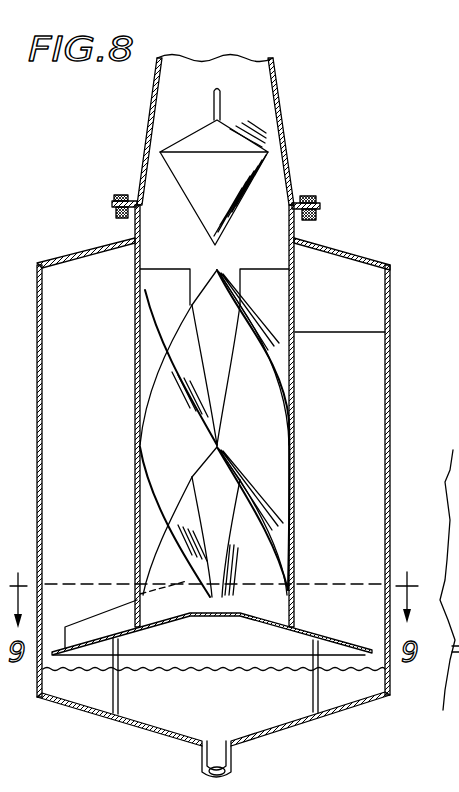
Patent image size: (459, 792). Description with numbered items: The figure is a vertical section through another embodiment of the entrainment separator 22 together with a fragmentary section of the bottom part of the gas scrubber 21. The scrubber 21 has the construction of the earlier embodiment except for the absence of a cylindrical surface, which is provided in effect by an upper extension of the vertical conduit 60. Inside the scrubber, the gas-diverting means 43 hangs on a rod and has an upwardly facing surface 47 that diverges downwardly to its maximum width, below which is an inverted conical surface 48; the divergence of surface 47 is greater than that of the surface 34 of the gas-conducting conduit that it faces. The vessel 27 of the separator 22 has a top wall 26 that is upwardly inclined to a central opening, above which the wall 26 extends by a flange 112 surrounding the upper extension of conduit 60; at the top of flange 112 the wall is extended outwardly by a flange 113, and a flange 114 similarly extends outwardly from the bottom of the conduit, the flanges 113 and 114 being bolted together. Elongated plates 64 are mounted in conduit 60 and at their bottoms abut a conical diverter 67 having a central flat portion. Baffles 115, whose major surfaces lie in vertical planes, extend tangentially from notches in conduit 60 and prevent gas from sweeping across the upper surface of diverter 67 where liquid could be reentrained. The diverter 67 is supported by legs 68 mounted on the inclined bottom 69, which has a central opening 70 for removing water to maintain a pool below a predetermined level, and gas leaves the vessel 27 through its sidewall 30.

The gas scrubber 21 is at (303, 108).
The surface of the gas-conducting conduit 34 is at (150, 121).
The gas-diverting means 43 is at (244, 122).
The upwardly facing surface 47 is at (198, 136).
The inverted conical surface 48 is at (242, 200).
The flange 112 is at (132, 228).
The flange 113 is at (116, 213).
The flange 114 is at (116, 197).
The top wall 26 is at (337, 256).
The entrainment separator 22 is at (389, 233).
The sidewall 30 is at (388, 460).
The vessel 27 is at (414, 366).
The vertical conduit 60 is at (136, 360).
The elongated plates 64 is at (177, 307).
The baffles 115 is at (90, 613).
The conical diverter 67 is at (331, 642).
The legs 68 is at (119, 683).
The inclined bottom 69 is at (162, 733).
The central opening 70 is at (254, 759).